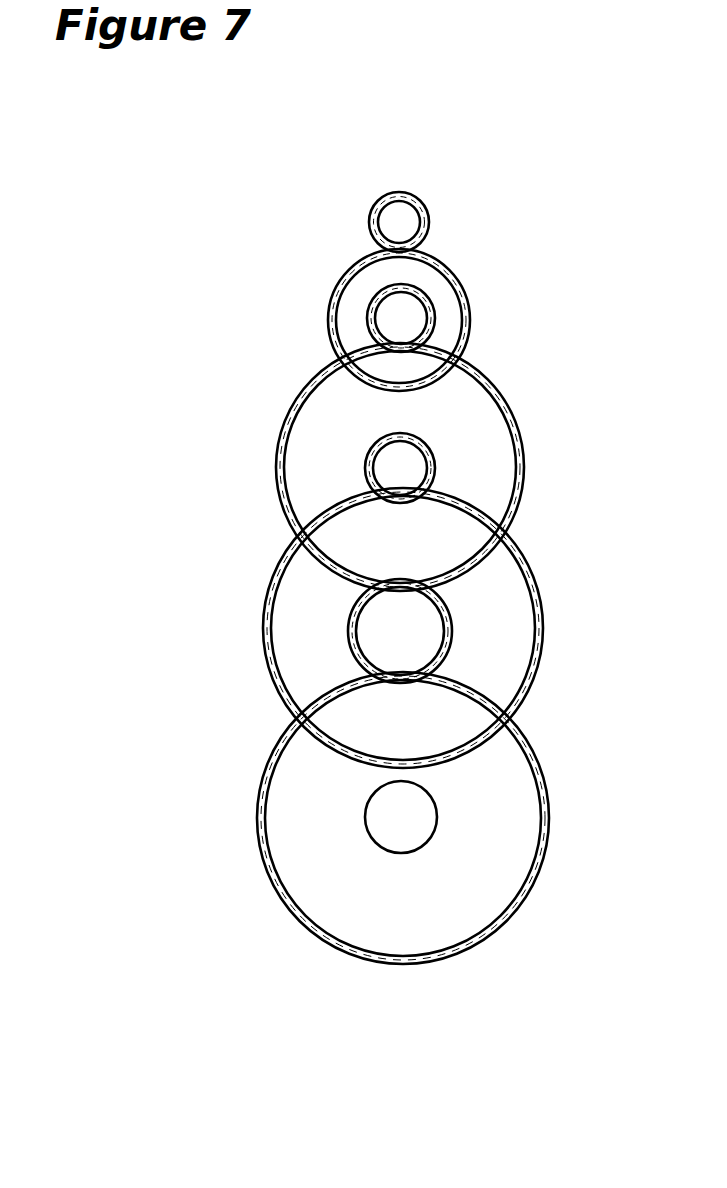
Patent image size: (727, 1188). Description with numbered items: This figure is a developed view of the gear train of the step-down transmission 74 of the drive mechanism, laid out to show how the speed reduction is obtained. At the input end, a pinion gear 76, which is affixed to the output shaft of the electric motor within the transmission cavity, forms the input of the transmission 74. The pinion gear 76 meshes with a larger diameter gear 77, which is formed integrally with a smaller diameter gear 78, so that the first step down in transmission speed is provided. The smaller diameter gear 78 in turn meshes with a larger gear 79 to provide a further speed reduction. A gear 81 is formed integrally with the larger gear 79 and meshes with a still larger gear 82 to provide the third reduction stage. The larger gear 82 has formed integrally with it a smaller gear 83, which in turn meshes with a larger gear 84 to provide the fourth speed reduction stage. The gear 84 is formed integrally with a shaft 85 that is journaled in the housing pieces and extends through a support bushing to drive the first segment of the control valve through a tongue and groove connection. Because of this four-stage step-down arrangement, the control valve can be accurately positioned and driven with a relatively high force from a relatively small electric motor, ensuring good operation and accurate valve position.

The transmission 74 is at (580, 370).
The pinion gear 76 is at (431, 221).
The larger diameter gear 77 is at (464, 282).
The smaller diameter gear 78 is at (434, 317).
The larger gear 79 is at (526, 470).
The gear 81 is at (436, 468).
The larger gear 82 is at (531, 560).
The smaller gear 83 is at (453, 622).
The larger gear 84 is at (548, 798).
The shaft 85 is at (415, 837).